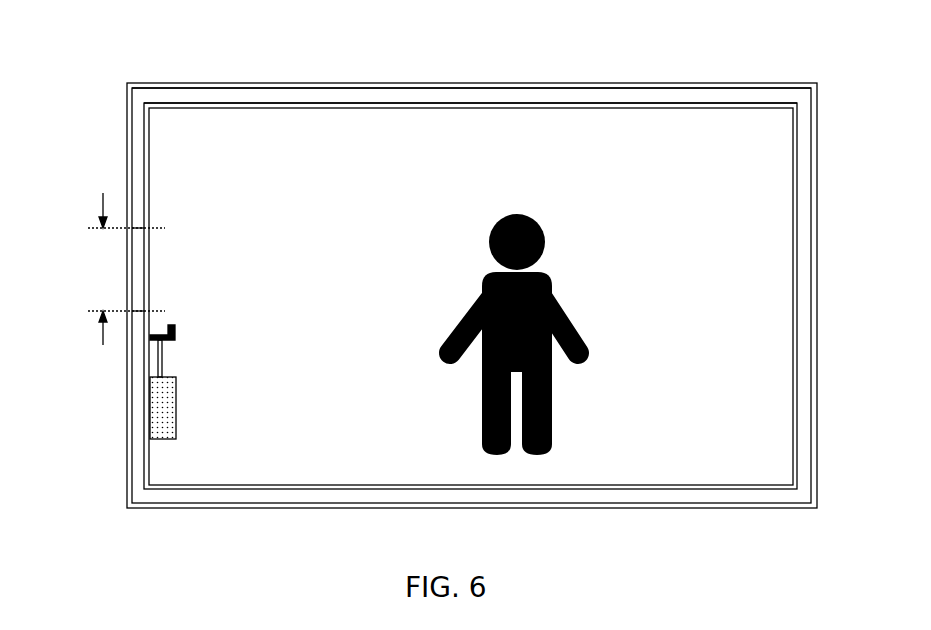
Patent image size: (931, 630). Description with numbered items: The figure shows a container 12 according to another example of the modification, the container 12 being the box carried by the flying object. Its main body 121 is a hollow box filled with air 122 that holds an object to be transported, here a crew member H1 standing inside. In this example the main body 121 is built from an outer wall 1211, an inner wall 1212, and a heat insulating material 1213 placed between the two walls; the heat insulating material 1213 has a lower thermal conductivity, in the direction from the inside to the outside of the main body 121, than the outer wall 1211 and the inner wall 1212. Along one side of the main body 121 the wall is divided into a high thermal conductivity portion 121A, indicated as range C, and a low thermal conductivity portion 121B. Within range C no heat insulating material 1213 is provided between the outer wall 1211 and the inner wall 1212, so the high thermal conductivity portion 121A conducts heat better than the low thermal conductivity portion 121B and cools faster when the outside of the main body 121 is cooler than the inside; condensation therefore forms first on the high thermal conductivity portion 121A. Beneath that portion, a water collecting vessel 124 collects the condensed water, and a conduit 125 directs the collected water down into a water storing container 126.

The container 12 is at (662, 66).
The main body 121 is at (273, 130).
The high thermal conductivity portion 121A is at (150, 262).
The low thermal conductivity portion 121B is at (140, 178).
The outer wall 1211 is at (403, 87).
The inner wall 1212 is at (456, 105).
The heat insulating material 1213 is at (511, 97).
The air 122 is at (752, 215).
The water collecting vessel 124 is at (176, 333).
The conduit 125 is at (163, 365).
The water storing container 126 is at (177, 415).
The crew member H1 is at (517, 214).
The range C is at (126, 269).